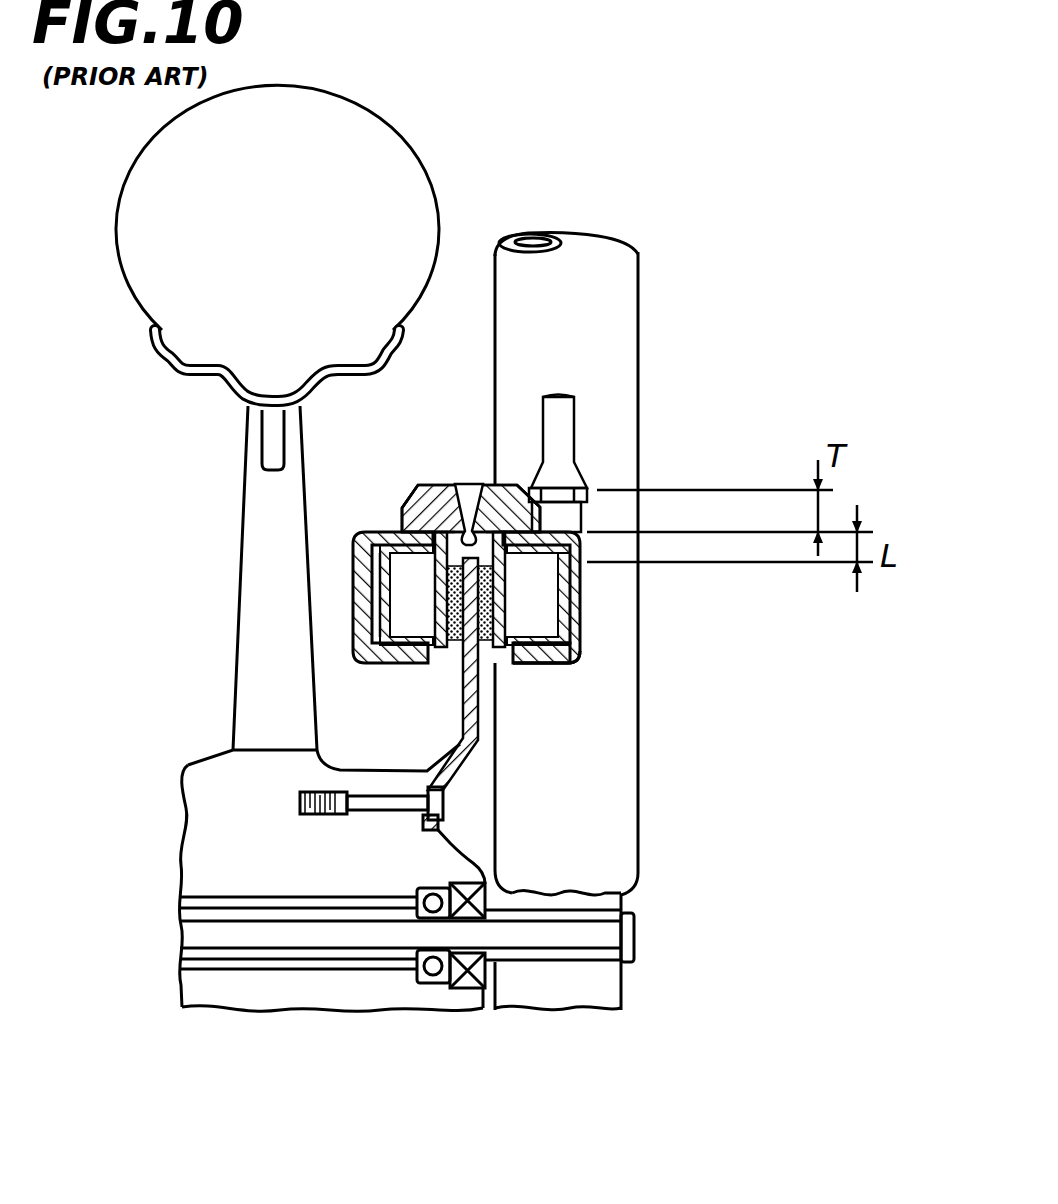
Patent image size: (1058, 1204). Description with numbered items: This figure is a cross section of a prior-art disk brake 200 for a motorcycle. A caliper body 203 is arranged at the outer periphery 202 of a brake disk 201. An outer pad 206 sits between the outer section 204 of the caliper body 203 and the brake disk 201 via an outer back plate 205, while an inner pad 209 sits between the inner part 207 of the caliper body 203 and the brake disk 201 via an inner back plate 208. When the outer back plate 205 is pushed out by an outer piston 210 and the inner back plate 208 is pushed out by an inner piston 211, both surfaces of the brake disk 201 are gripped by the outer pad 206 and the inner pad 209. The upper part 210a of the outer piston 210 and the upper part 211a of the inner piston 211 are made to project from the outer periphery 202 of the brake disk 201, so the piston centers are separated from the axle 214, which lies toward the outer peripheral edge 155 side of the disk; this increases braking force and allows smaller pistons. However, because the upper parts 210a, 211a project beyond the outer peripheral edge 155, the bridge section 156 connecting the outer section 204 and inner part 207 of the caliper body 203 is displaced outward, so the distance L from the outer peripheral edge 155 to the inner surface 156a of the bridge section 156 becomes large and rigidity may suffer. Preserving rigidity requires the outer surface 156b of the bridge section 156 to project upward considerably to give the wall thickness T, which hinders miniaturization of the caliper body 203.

The outer peripheral edge 155 is at (464, 486).
The bridge section 156 is at (482, 482).
The inner surface 156a is at (457, 482).
The outer surface 156b is at (494, 472).
The disk brake 200 is at (812, 320).
The brake disk 201 is at (476, 718).
The outer periphery 202 is at (584, 600).
The caliper body 203 is at (545, 432).
The outer section 204 is at (584, 638).
The outer back plate 205 is at (568, 659).
The outer pad 206 is at (503, 648).
The inner part 207 is at (354, 633).
The inner back plate 208 is at (433, 593).
The inner pad 209 is at (447, 660).
The outer piston 210 is at (584, 574).
The upper part of outer piston 210a is at (587, 523).
The inner piston 211 is at (368, 567).
The upper part of inner piston 211a is at (392, 533).
The axle 214 is at (588, 945).